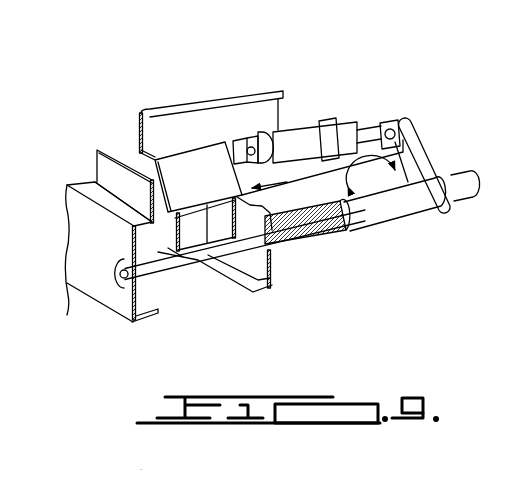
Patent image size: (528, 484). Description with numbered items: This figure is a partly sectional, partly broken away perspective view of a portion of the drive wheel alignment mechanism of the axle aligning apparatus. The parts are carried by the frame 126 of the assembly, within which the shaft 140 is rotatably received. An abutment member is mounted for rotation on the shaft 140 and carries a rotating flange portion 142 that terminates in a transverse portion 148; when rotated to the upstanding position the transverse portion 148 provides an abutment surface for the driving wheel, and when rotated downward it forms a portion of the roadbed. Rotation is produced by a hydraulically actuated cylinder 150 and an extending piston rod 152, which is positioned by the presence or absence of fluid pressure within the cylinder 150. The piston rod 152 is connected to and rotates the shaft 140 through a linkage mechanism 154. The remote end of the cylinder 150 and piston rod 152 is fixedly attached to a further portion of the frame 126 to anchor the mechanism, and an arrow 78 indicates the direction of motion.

The frame 126 is at (135, 128).
The transverse portion 148 is at (205, 187).
The hydraulically actuated cylinder 150 is at (302, 135).
The piston rod 152 is at (373, 132).
The linkage mechanism 154 is at (427, 148).
The shaft 140 is at (406, 212).
The rotating flange portion 142 is at (195, 270).
The direction of movement arrow 78 is at (288, 184).